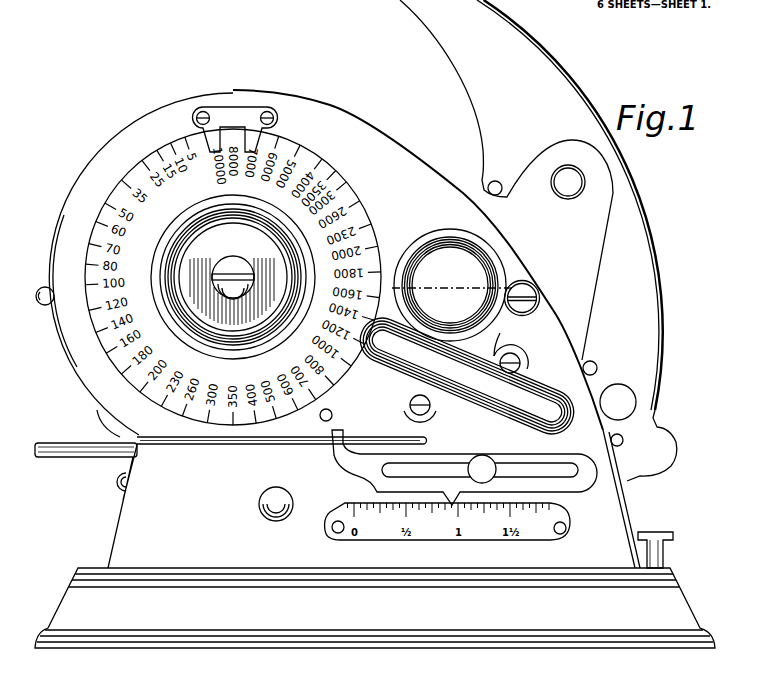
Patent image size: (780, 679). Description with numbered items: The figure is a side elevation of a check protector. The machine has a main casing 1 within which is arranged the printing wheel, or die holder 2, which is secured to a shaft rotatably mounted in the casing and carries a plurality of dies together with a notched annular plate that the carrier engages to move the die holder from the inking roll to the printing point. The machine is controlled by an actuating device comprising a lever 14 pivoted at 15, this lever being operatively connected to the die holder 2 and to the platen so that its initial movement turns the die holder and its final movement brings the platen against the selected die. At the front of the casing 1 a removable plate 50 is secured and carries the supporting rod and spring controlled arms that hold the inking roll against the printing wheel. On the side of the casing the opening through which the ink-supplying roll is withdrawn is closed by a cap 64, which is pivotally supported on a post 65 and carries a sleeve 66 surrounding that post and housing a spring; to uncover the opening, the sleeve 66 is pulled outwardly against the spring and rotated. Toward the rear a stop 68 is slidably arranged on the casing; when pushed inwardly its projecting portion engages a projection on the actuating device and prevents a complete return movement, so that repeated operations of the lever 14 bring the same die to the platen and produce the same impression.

The main casing 1 is at (344, 329).
The die holder 2 is at (233, 553).
The lever 14 is at (642, 291).
The pivot 15 is at (571, 183).
The removable plate 50 is at (56, 335).
The cap 64 is at (452, 285).
The post 65 is at (531, 291).
The sleeve 66 is at (527, 283).
The stop 68 is at (619, 393).